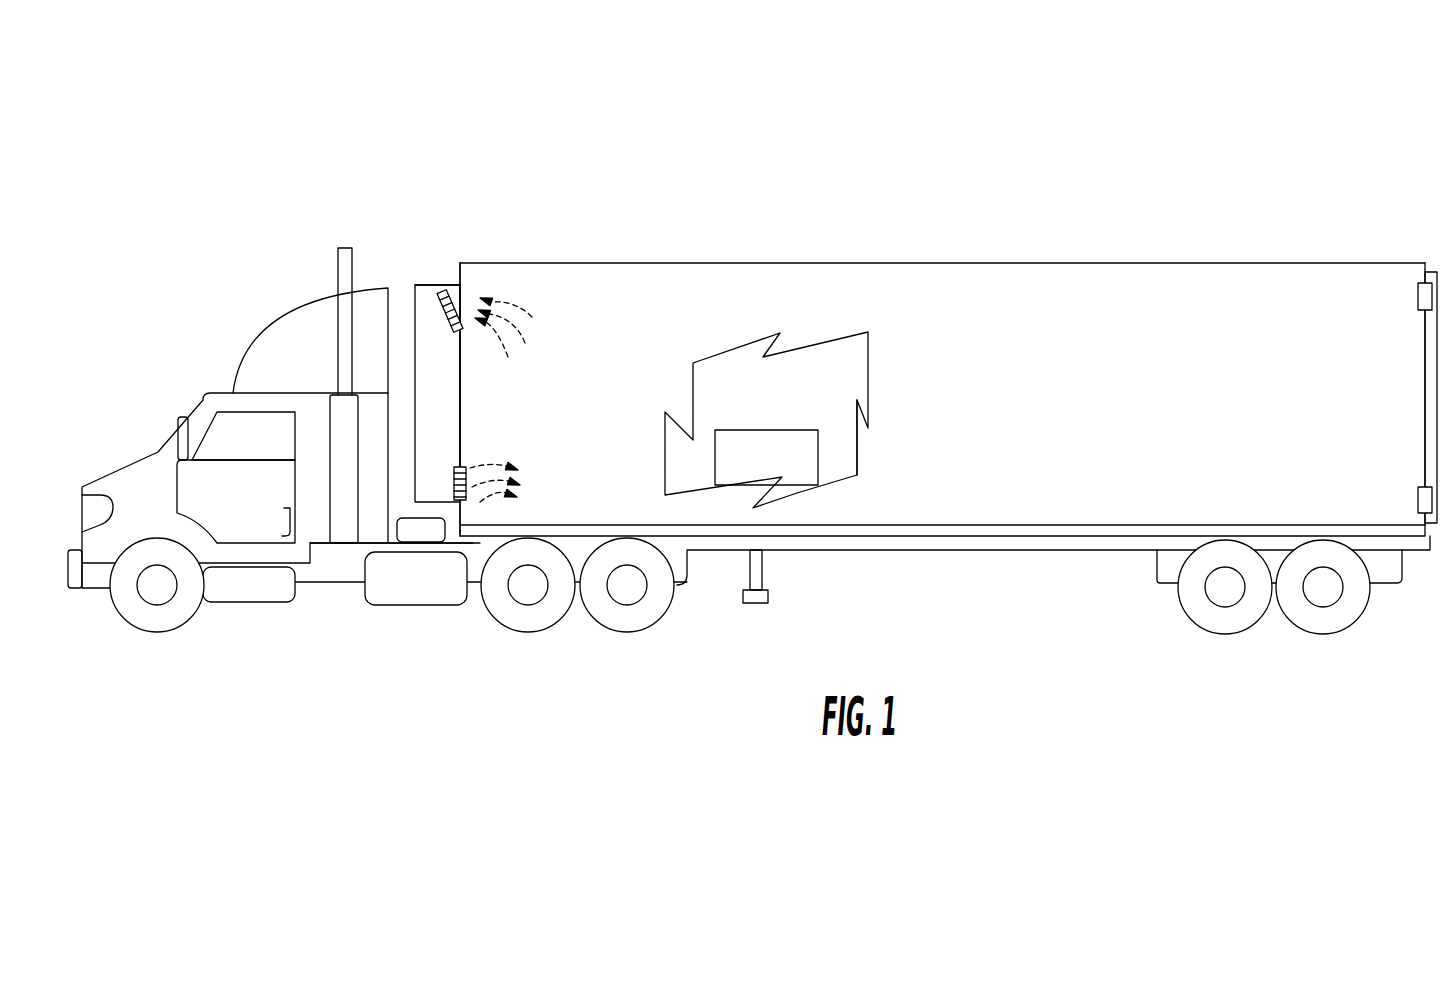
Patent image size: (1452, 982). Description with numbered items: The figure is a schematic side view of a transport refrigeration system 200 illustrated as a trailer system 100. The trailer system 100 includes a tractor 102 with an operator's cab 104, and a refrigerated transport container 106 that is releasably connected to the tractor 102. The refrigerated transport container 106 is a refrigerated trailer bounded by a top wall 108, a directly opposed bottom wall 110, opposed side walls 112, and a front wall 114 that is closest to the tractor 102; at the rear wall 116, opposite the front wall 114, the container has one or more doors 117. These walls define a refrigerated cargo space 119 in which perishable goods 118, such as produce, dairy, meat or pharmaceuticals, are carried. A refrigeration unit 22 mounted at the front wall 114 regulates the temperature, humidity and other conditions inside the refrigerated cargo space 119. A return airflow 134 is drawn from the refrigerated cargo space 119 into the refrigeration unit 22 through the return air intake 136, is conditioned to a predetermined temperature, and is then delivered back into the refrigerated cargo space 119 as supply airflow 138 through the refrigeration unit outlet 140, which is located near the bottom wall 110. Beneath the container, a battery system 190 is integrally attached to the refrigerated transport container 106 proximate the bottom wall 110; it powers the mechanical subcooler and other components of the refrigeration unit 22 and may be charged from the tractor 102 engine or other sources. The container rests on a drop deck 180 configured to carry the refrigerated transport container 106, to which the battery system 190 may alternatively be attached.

The trailer system 100 is at (350, 149).
The tractor 102 is at (95, 592).
The cab 104 is at (218, 432).
The refrigerated transport container 106 is at (1188, 285).
The top wall 108 is at (613, 262).
The bottom wall 110 is at (985, 523).
The side walls 112 is at (797, 403).
The front wall 114 is at (462, 417).
The rear wall 116 is at (1423, 350).
The doors 117 is at (1423, 440).
The perishable goods 118 is at (715, 460).
The refrigerated cargo space 119 is at (846, 378).
The return airflow 134 is at (540, 312).
The refrigeration unit return air intake 136 is at (457, 305).
The supply airflow 138 is at (523, 497).
The refrigeration unit outlet 140 is at (460, 468).
The drop deck 180 is at (1060, 552).
The battery system 190 is at (910, 532).
The transport refrigeration system 200 is at (448, 228).
The refrigeration unit 22 is at (415, 295).